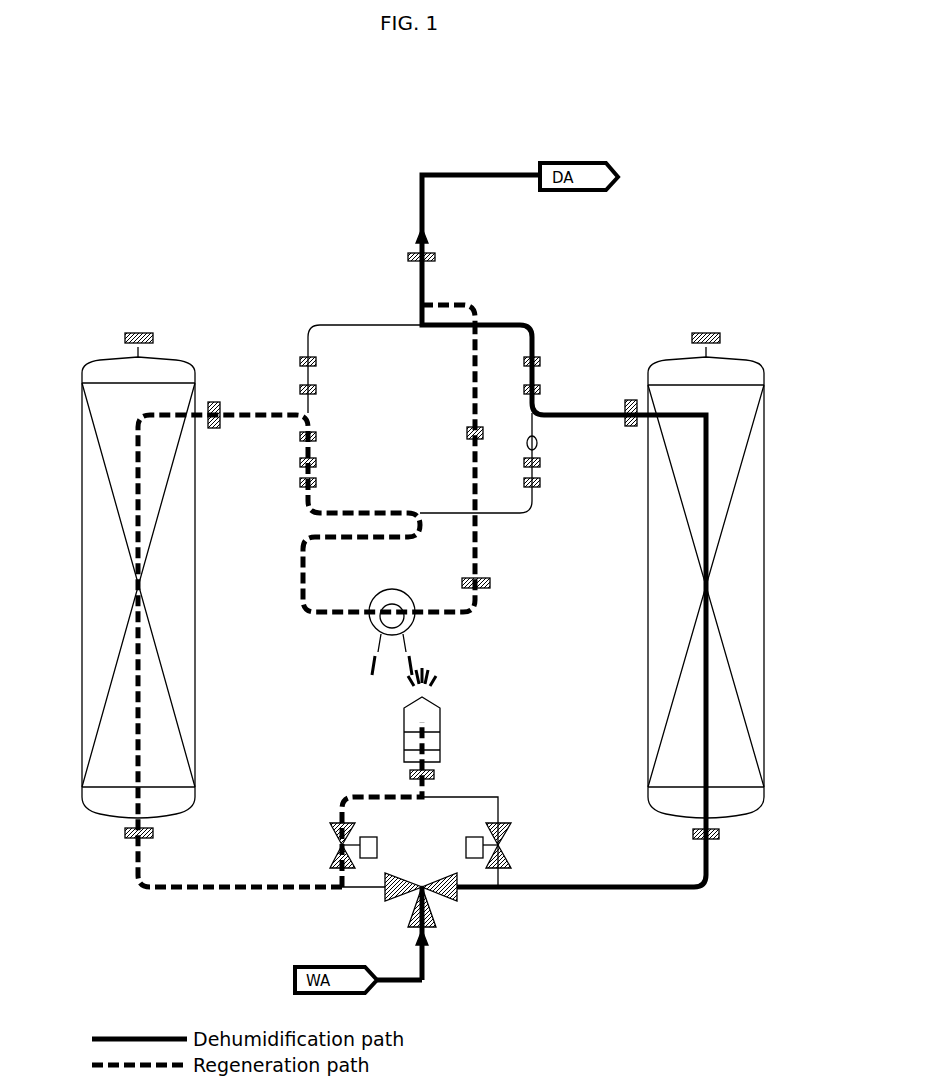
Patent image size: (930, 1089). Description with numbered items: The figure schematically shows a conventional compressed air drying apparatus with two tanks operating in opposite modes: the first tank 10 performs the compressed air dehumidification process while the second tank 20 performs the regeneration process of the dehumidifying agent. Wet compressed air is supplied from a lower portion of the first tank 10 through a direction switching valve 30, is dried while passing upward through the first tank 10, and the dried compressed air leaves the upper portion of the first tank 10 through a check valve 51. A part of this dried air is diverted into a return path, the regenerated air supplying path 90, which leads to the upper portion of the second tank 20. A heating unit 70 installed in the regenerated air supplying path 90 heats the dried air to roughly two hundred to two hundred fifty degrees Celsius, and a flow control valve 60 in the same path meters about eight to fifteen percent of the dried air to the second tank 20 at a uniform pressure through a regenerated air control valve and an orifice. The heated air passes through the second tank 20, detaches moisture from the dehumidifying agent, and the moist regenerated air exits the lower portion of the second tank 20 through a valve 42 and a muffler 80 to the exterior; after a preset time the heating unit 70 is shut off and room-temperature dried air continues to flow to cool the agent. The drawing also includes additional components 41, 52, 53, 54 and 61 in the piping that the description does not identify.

The first tank 10 is at (196, 558).
The second tank 20 is at (645, 658).
The direction switching valve 30 is at (440, 900).
The first flow control valve 41 is at (330, 841).
The valve 42 is at (512, 841).
The check valve 51 is at (302, 376).
The second switching valve 52 is at (302, 468).
The third switching valve 53 is at (540, 370).
The fourth switching valve 54 is at (542, 478).
The flow control valve 60 is at (466, 436).
The regeneration path valve 61 is at (492, 583).
The heating unit 70 is at (414, 625).
The muffler 80 is at (444, 732).
The regenerated air supplying path 90 is at (458, 297).